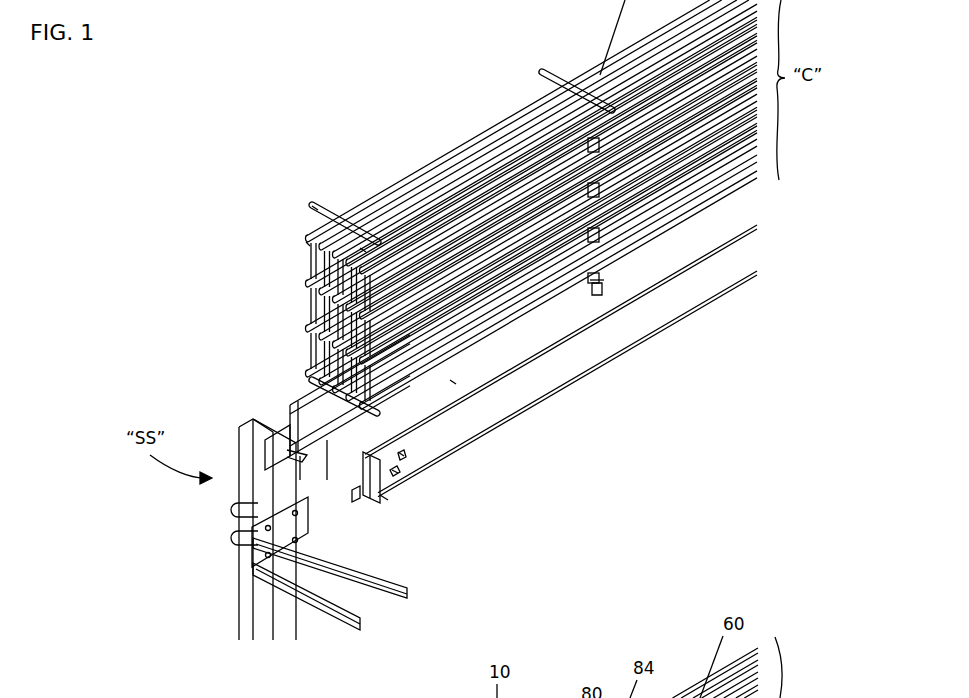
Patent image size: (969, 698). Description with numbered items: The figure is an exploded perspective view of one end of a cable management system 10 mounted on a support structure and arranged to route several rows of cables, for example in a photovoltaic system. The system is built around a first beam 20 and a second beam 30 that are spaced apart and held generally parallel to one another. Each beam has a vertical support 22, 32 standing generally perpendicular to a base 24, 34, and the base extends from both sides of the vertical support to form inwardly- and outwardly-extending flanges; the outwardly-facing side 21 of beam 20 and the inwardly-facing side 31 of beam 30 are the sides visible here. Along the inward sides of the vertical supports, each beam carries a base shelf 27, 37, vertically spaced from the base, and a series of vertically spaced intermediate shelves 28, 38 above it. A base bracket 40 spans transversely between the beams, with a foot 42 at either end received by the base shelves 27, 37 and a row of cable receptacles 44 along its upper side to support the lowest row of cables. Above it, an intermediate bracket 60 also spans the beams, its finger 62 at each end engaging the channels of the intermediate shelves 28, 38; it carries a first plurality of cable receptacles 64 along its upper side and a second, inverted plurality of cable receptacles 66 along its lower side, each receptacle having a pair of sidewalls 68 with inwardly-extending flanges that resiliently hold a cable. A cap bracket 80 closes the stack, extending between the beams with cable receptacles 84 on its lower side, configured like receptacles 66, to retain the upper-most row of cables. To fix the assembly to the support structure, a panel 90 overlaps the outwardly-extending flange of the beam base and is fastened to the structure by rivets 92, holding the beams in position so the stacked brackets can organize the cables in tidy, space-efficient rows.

The cable management system 10 is at (412, 108).
The first beam 20 is at (562, 402).
The outwardly-facing side 21 is at (447, 432).
The vertical support 22 is at (592, 370).
The base 24 is at (690, 318).
The base shelf 27 is at (352, 497).
The intermediate shelves 28 is at (393, 477).
The second beam 30 is at (334, 475).
The inwardly-facing side 31 is at (282, 440).
The vertical support 32 is at (302, 400).
The base 34 is at (742, 208).
The base shelf 37 is at (320, 400).
The intermediate shelves 38 is at (327, 417).
The base bracket 40 is at (595, 290).
The foot 42 is at (413, 458).
The cable receptacles 44 is at (405, 497).
The intermediate bracket 60 is at (607, 147).
The finger 62 is at (305, 245).
The first plurality of cable receptacles 64 is at (314, 210).
The second plurality of cable receptacles 66 is at (420, 290).
The sidewalls 68 is at (450, 380).
The cap bracket 80 is at (333, 215).
The cable receptacles 84 is at (362, 250).
The panel 90 is at (393, 475).
The rivets 92 is at (400, 455).